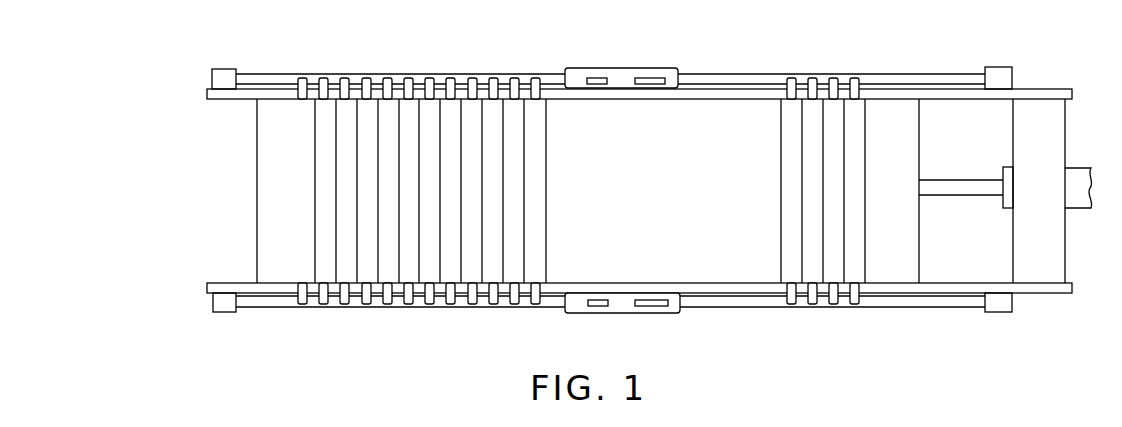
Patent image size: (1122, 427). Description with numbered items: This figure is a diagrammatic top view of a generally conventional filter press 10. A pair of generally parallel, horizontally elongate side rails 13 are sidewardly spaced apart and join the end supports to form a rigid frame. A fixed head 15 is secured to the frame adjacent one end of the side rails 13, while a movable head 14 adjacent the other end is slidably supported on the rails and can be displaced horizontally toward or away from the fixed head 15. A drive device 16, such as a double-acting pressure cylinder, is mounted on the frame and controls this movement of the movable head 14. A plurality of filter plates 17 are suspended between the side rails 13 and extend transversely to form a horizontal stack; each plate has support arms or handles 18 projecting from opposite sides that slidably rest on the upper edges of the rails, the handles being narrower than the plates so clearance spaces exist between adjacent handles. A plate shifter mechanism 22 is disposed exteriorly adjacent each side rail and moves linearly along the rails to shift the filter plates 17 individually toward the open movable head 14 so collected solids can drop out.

The filter press 10 is at (311, 326).
The side rails 13 is at (727, 95).
The movable head 14 is at (890, 273).
The fixed head 15 is at (270, 177).
The drive device 16 is at (966, 182).
The filter plates 17 is at (517, 190).
The support arms or handles 18 is at (493, 78).
The plate shifter mechanism 22 is at (651, 70).